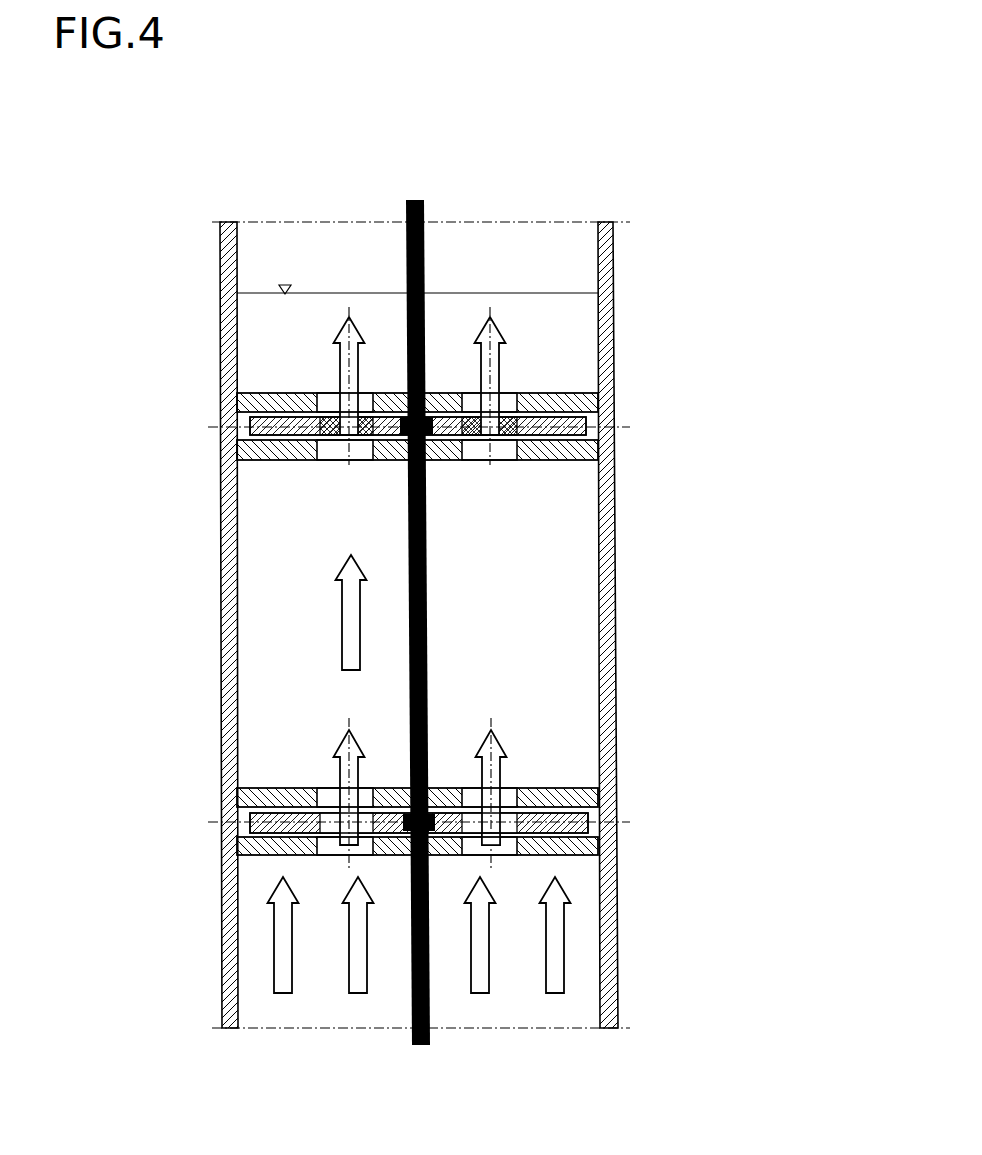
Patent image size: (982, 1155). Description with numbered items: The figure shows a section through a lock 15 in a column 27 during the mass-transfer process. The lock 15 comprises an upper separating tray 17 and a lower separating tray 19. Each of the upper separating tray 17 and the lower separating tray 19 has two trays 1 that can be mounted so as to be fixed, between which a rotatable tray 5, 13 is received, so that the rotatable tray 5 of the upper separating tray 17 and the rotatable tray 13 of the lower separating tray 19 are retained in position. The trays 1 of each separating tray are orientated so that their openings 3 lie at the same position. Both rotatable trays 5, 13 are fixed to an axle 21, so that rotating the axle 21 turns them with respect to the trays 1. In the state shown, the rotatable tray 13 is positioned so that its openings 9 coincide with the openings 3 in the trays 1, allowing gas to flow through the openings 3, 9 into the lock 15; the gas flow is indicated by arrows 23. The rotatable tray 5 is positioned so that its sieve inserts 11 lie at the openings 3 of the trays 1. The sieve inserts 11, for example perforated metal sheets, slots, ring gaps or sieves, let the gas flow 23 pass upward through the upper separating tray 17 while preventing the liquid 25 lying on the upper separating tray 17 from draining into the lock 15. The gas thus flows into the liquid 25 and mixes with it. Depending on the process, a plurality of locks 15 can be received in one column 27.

The trays that can be mounted so as to be fixed 1 is at (253, 403).
The openings 3 is at (327, 392).
The rotatable tray 5 is at (258, 423).
The openings 9 is at (507, 817).
The sieve inserts 11 is at (318, 437).
The rotatable tray 13 is at (253, 825).
The lock 15 is at (528, 646).
The upper separating tray 17 is at (627, 417).
The lower separating tray 19 is at (624, 809).
The axle 21 is at (423, 250).
The arrows 23 is at (497, 323).
The liquid 25 is at (582, 310).
The column 27 is at (633, 650).